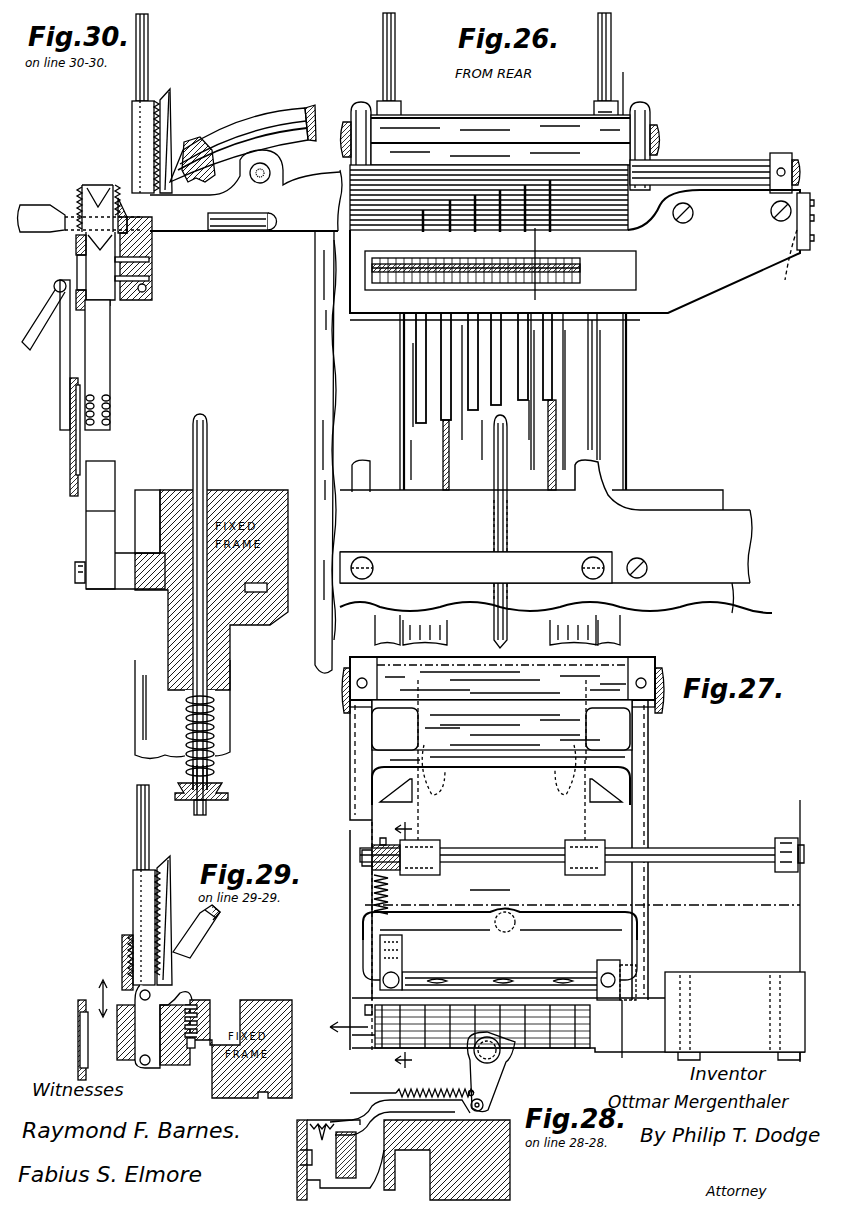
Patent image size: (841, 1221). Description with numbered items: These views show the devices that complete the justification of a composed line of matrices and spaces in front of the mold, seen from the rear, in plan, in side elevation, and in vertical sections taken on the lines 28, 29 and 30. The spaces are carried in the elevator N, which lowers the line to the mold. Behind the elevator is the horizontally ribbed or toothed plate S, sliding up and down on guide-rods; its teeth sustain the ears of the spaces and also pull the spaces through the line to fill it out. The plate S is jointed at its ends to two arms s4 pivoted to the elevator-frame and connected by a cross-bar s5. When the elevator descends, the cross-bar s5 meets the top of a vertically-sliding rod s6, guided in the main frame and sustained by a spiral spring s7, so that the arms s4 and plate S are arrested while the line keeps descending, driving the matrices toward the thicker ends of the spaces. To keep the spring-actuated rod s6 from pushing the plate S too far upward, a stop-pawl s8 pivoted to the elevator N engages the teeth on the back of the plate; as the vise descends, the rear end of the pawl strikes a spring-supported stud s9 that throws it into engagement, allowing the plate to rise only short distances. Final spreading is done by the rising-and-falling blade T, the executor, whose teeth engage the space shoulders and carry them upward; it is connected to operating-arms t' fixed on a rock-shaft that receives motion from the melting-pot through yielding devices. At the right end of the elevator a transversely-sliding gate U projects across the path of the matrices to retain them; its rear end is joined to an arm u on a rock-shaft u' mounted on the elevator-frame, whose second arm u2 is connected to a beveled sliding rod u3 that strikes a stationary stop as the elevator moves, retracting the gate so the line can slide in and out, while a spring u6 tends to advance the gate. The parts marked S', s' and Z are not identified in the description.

In FIG. 30, the toothed plate S is at (150, 103).
In FIG. 29, the toothed plate S is at (136, 887).
In FIG. 26, the toothed plate S is at (535, 101).
In FIG. 27, the toothed plate S is at (483, 967).
In FIG. 30, the toothed block S' is at (130, 141).
In FIG. 30, the pin s' is at (128, 310).
In FIG. 30, the arms s4 is at (243, 143).
In FIG. 29, the arms s4 is at (222, 928).
In FIG. 26, the arms s4 is at (350, 125).
In FIG. 27, the arms s4 is at (363, 940).
In FIG. 30, the cross-bar s5 is at (200, 150).
In FIG. 26, the cross-bar s5 is at (510, 158).
In FIG. 27, the cross-bar s5 is at (545, 940).
In FIG. 30, the vertically-sliding rod s6 is at (208, 454).
In FIG. 26, the vertically-sliding rod s6 is at (509, 531).
In FIG. 27, the vertically-sliding rod s6 is at (500, 940).
In FIG. 30, the spiral spring s7 is at (184, 700).
In FIG. 30, the stop-pawl s8 is at (172, 138).
In FIG. 29, the stop-pawl s8 is at (172, 868).
In FIG. 29, the spring-supported stud s9 is at (192, 1000).
In FIG. 28, the arm u is at (499, 1072).
In FIG. 27, the rock-shaft u' is at (582, 851).
In FIG. 28, the rock-shaft u' is at (508, 1055).
In FIG. 30, the second arm u2 is at (282, 200).
In FIG. 27, the second arm u2 is at (775, 866).
In FIG. 30, the sliding rod u3 is at (248, 222).
In FIG. 26, the sliding rod u3 is at (792, 262).
In FIG. 27, the sliding rod u3 is at (765, 922).
In FIG. 30, the spring u6 is at (60, 224).
In FIG. 27, the spring u6 is at (390, 897).
In FIG. 28, the spring u6 is at (412, 1082).
In FIG. 27, the sliding gate U is at (365, 1010).
In FIG. 28, the sliding gate U is at (400, 1121).
In FIG. 30, the elevator N is at (232, 200).
In FIG. 26, the elevator N is at (575, 255).
In FIG. 27, the elevator N is at (500, 895).
In FIG. 28, the elevator N is at (296, 1160).
In FIG. 30, the executor blade T is at (68, 452).
In FIG. 30, the operating-arms t' is at (44, 321).
In FIG. 30, the type bars Z is at (108, 378).
In FIG. 26, the type bars Z is at (470, 414).
In FIG. 27, the section line 28- 28 is at (375, 944).
In FIG. 27, the section line 29- 29 is at (403, 944).
In FIG. 26, the section line 30- 30 is at (564, 358).
In FIG. 27, the section line 30- 30 is at (711, 928).